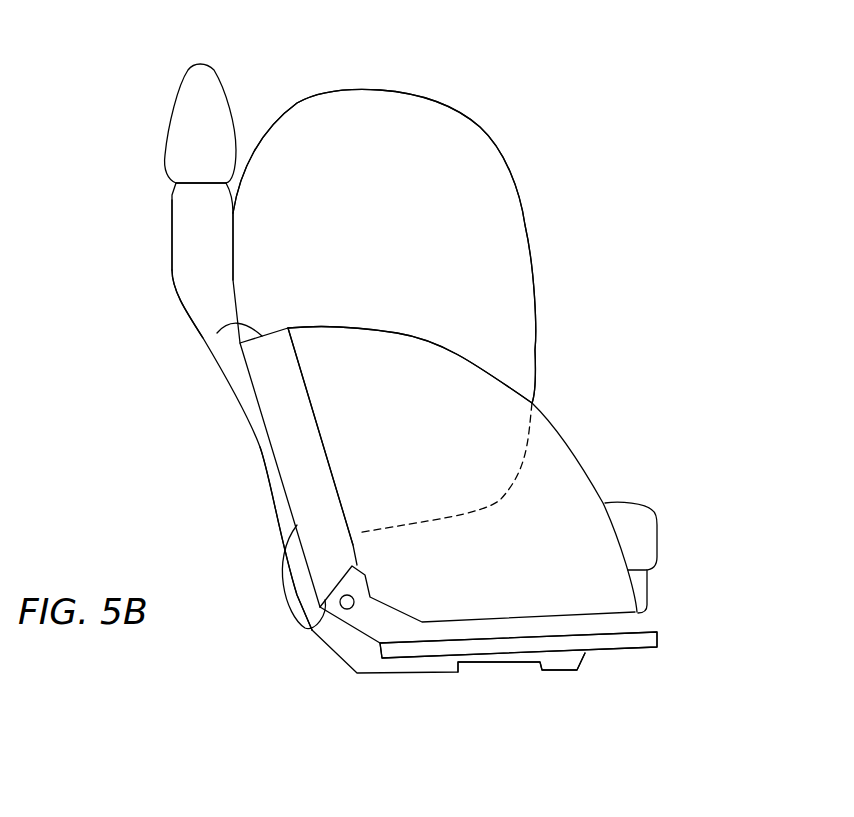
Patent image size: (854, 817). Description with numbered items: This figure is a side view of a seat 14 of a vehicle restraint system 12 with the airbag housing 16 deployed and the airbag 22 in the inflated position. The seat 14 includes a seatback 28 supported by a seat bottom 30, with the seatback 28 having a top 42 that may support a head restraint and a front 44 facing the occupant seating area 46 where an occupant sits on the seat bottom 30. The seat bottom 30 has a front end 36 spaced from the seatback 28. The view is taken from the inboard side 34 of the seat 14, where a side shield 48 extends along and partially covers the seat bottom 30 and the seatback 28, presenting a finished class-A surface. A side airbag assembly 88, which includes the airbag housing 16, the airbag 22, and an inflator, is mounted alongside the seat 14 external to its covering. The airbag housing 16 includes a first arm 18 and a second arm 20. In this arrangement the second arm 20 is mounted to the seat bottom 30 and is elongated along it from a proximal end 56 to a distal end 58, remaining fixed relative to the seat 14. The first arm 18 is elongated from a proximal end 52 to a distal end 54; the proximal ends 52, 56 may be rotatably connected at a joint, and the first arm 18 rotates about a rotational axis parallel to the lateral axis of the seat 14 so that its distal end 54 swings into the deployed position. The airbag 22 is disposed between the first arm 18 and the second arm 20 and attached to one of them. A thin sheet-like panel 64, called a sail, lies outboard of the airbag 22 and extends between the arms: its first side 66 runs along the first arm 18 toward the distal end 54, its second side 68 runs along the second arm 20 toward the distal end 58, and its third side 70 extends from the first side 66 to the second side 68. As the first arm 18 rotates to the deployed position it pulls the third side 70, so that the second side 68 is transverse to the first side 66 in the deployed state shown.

The restraint system 12 is at (542, 97).
The seat 14 is at (167, 235).
The airbag housing 16 is at (363, 643).
The first arm 18 is at (514, 646).
The second arm 20 is at (273, 455).
The airbag 22 is at (513, 177).
The seatback 28 is at (173, 280).
The seat bottom 30 is at (662, 558).
The inboard side 34 is at (217, 250).
The front end 36 is at (658, 528).
The top 42 is at (175, 183).
The front 44 is at (226, 177).
The occupant seating area 46 is at (641, 236).
The side shield 48 is at (290, 590).
The proximal end 52 is at (315, 630).
The distal end 54 is at (640, 623).
The proximal end 56 is at (333, 585).
The distal end 58 is at (217, 333).
The panel 64 is at (580, 450).
The first side 66 is at (575, 622).
The second side 68 is at (328, 455).
The third side 70 is at (537, 408).
The side airbag assembly 88 is at (287, 510).